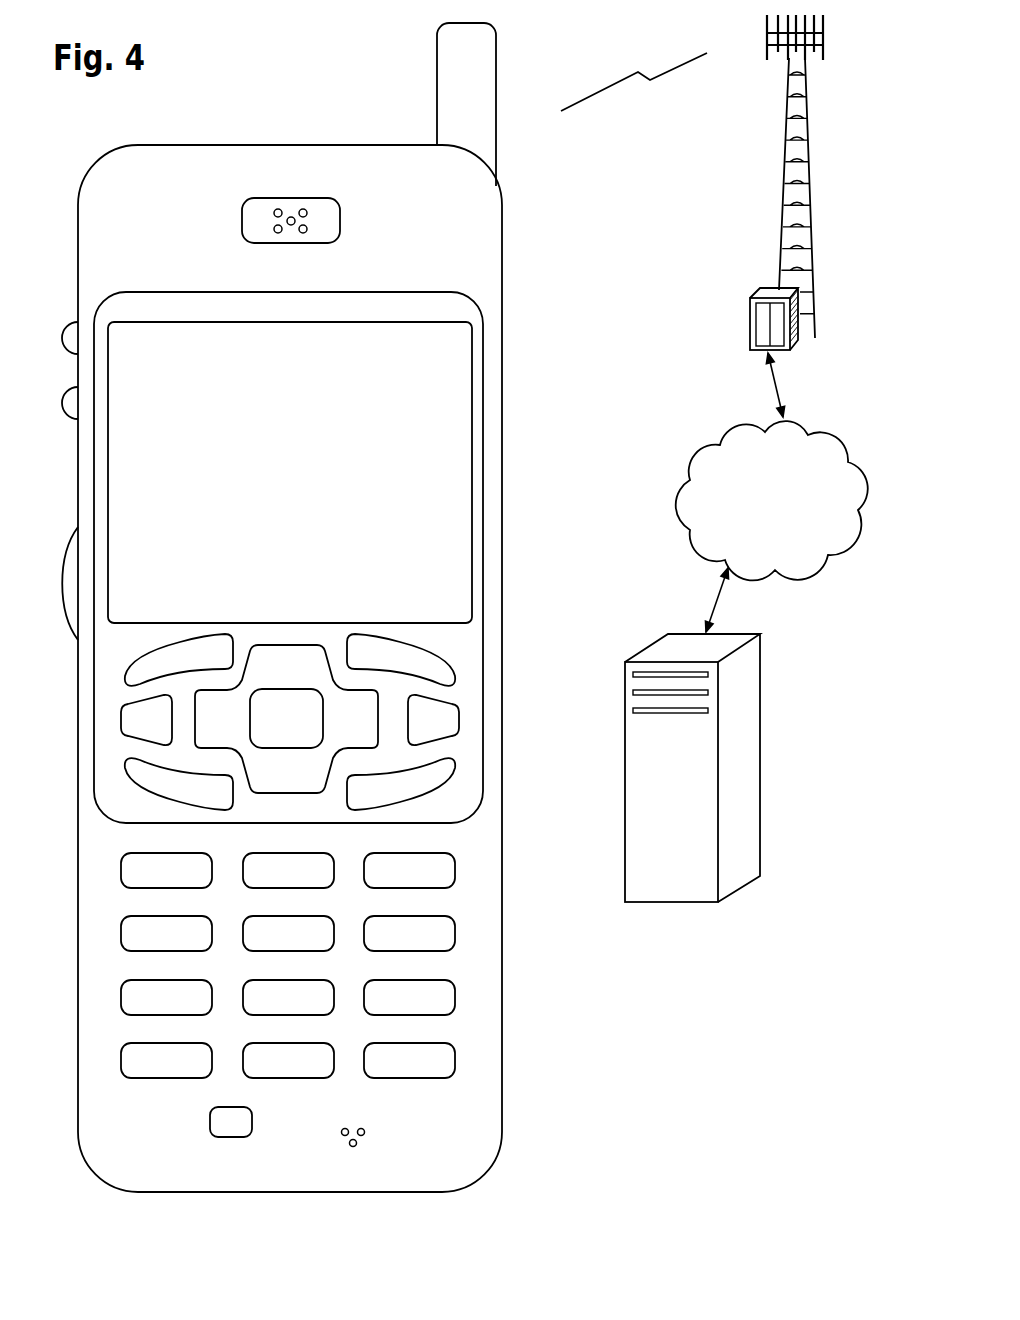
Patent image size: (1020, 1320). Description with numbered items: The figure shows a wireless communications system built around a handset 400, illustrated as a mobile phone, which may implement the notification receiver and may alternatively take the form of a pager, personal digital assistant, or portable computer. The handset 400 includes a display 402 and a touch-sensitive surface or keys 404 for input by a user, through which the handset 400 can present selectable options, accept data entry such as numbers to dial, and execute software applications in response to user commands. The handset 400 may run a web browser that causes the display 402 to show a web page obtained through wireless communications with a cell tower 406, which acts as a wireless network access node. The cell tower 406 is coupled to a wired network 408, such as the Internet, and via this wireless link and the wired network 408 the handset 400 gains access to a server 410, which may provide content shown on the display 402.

The handset 400 is at (128, 1192).
The display 402 is at (473, 337).
The keys 404 is at (510, 633).
The cell tower 406 is at (780, 195).
The wired network 408 is at (685, 545).
The server 410 is at (665, 905).